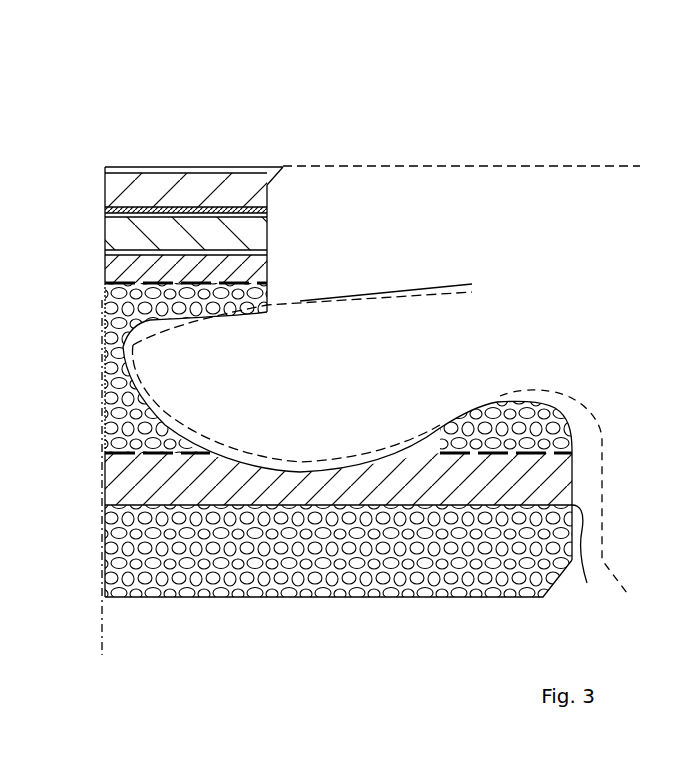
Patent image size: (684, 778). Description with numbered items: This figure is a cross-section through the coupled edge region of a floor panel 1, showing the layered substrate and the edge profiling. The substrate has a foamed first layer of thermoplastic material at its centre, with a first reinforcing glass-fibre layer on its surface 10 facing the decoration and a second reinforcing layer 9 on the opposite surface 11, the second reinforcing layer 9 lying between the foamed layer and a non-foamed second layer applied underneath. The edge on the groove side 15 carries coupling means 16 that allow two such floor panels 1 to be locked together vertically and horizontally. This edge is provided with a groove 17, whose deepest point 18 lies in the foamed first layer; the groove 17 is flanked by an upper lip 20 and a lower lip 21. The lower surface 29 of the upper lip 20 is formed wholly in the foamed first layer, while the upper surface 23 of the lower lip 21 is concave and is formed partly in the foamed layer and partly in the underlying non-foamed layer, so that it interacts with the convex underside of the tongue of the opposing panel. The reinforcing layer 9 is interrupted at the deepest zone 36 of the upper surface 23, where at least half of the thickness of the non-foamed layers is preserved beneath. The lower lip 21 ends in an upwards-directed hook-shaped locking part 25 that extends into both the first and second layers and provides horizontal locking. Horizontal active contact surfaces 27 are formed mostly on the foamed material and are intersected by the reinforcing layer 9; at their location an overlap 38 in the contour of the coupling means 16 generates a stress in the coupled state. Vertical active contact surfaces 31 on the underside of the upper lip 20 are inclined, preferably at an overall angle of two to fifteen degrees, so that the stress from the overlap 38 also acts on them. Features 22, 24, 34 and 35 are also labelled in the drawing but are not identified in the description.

The floor panel 1 is at (585, 165).
The second reinforcing layer 9 is at (172, 455).
The surface of the foamed layer facing the decoration 10 is at (110, 250).
The opposite surface of the foamed layer 11 is at (318, 453).
The edge on the groove side 15 is at (553, 287).
The coupling means 16 is at (366, 632).
The groove 17 is at (92, 494).
The deepest point of the groove 18 is at (107, 352).
The upper lip 20 is at (183, 270).
The lower lip 21 is at (355, 476).
The sealing lip 22 is at (272, 352).
The upper surface of the lower lip 23 is at (450, 433).
The seat contour 24 is at (563, 502).
The hook-shaped locking part 25 is at (502, 417).
The horizontal active contact surface 27 is at (497, 453).
The lower surface of the upper lip 29 is at (203, 313).
The vertical active contact surface 31 is at (240, 250).
The lower foam body 34 is at (272, 573).
The foam side wall 35 is at (104, 428).
The deepest zone of the upper surface of the lower lip 36 is at (315, 470).
The overlap 38 is at (478, 395).